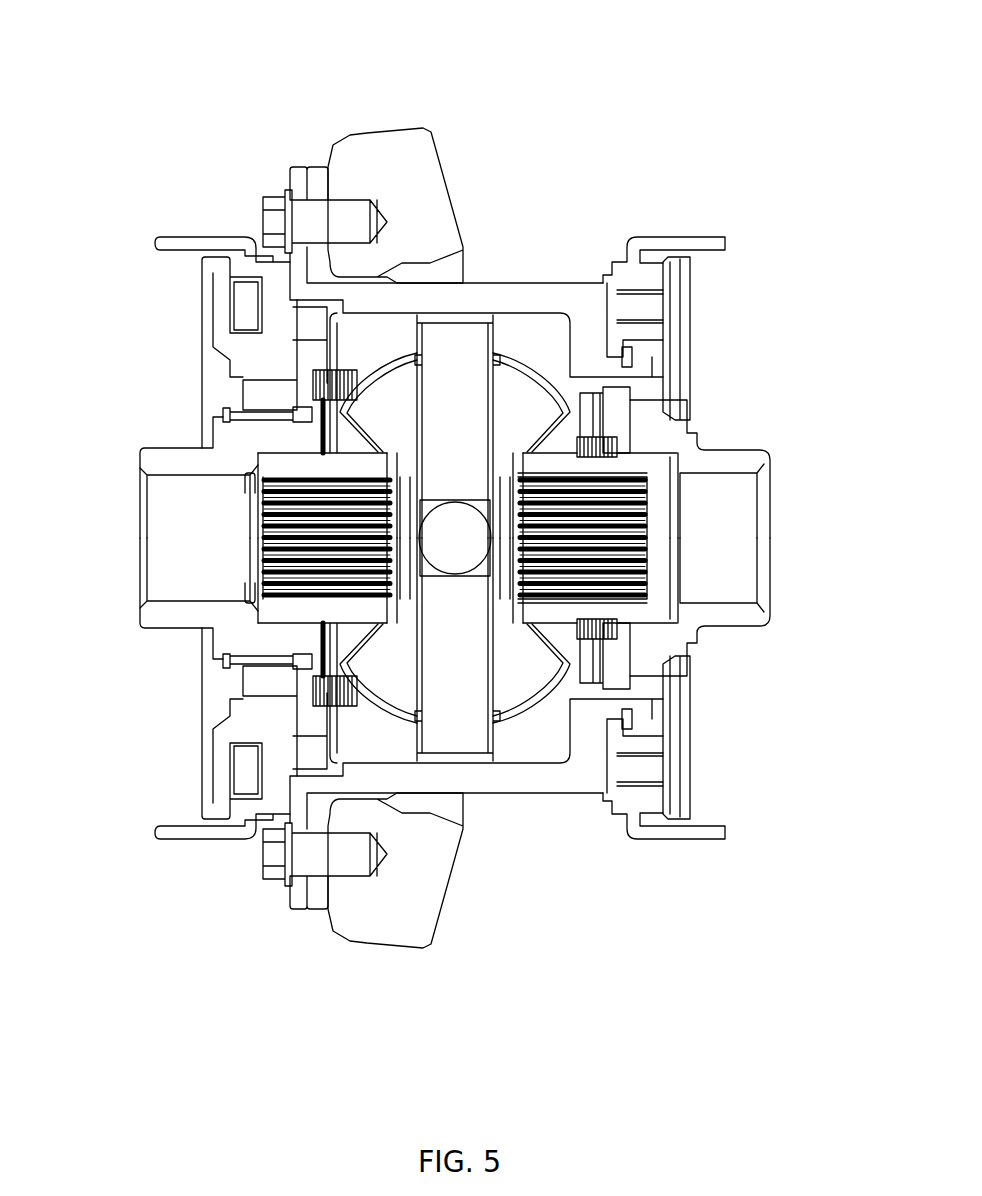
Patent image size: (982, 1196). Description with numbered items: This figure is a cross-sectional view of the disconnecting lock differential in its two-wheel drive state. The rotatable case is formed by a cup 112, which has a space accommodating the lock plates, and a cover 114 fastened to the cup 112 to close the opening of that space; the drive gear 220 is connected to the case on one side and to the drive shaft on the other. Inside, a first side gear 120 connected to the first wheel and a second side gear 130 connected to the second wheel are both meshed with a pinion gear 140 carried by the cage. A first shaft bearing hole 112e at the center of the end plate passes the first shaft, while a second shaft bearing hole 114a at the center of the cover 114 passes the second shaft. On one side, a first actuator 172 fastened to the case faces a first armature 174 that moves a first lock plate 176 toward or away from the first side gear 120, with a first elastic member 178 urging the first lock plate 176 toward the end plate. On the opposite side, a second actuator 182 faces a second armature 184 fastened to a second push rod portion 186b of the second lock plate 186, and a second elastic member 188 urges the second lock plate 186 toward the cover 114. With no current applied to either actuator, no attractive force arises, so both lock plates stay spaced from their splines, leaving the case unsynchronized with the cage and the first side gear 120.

The cup 112 is at (500, 278).
The first shaft bearing hole 112e is at (720, 505).
The cover 114 is at (293, 158).
The second shaft bearing hole 114a is at (185, 538).
The first side gear 120 is at (690, 544).
The second side gear 130 is at (240, 572).
The pinion gear 140 is at (516, 722).
The first actuator 172 is at (659, 227).
The first armature 174 is at (704, 318).
The first lock plate 176 is at (629, 416).
The first elastic member 178 is at (633, 628).
The second actuator 182 is at (214, 227).
The second armature 184 is at (194, 283).
The second lock plate 186 is at (282, 341).
The second push rod portion 186b is at (243, 404).
The second elastic member 188 is at (300, 699).
The drive gear 220 is at (383, 127).